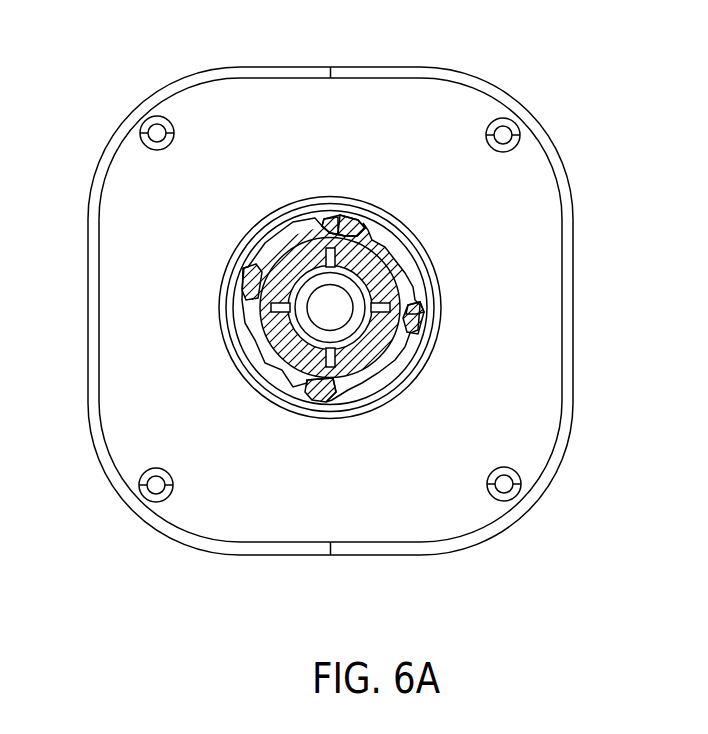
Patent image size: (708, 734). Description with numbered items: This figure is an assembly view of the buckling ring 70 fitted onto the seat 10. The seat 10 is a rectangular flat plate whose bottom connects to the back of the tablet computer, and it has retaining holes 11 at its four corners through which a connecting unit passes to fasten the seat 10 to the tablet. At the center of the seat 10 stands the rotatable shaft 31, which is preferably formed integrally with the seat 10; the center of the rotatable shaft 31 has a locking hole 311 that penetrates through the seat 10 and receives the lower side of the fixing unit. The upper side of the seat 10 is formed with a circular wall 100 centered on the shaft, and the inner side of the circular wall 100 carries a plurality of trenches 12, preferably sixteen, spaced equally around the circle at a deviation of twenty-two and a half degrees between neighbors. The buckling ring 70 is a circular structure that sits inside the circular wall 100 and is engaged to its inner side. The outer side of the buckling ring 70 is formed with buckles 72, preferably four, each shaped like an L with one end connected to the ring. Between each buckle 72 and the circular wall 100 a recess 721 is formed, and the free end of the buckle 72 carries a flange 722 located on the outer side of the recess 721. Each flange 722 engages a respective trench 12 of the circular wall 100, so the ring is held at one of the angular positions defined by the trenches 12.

The seat 10 is at (177, 73).
The retaining holes 11 is at (146, 122).
The trenches 12 is at (420, 310).
The rotatable shaft 31 is at (349, 334).
The locking hole 311 is at (336, 330).
The buckling ring 70 is at (258, 329).
The buckles 72 is at (313, 400).
The recess 721 is at (343, 222).
The flange 722 is at (421, 305).
The circular wall 100 is at (428, 368).